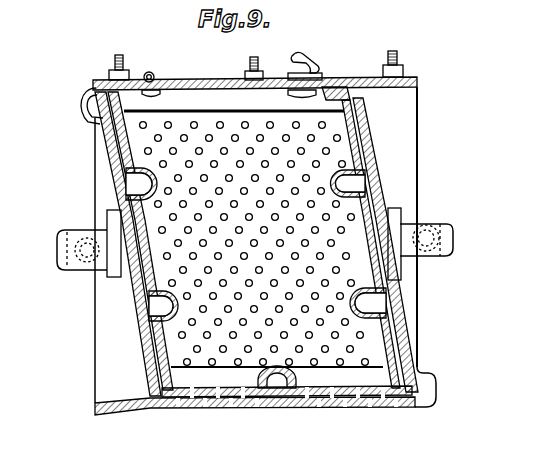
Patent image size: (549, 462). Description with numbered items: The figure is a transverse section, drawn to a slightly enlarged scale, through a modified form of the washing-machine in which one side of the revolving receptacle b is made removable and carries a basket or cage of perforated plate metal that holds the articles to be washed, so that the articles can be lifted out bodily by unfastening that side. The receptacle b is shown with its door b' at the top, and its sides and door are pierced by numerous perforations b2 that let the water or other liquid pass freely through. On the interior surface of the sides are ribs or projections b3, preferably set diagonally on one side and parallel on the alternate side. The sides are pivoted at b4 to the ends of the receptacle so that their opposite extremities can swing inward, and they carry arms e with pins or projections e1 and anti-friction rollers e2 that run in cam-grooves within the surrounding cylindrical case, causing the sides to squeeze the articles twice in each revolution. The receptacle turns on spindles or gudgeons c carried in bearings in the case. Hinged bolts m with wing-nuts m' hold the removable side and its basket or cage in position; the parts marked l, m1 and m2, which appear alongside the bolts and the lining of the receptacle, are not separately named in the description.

The washing chamber or receptacle b is at (255, 408).
The door b' is at (255, 92).
The perforations b2 is at (129, 143).
The ribs or projections b3 is at (92, 100).
The pivot of the receptacle sides b4 is at (420, 390).
The spindles or gudgeons c is at (333, 318).
The arms e is at (63, 266).
The pins or projections e1 is at (87, 241).
The anti-friction rollers e2 is at (92, 266).
The inner wall / lining l is at (148, 243).
The hinged bolts m is at (264, 52).
The nut m1 is at (403, 70).
The nut m2 is at (109, 75).
The wing-nuts m' is at (283, 66).